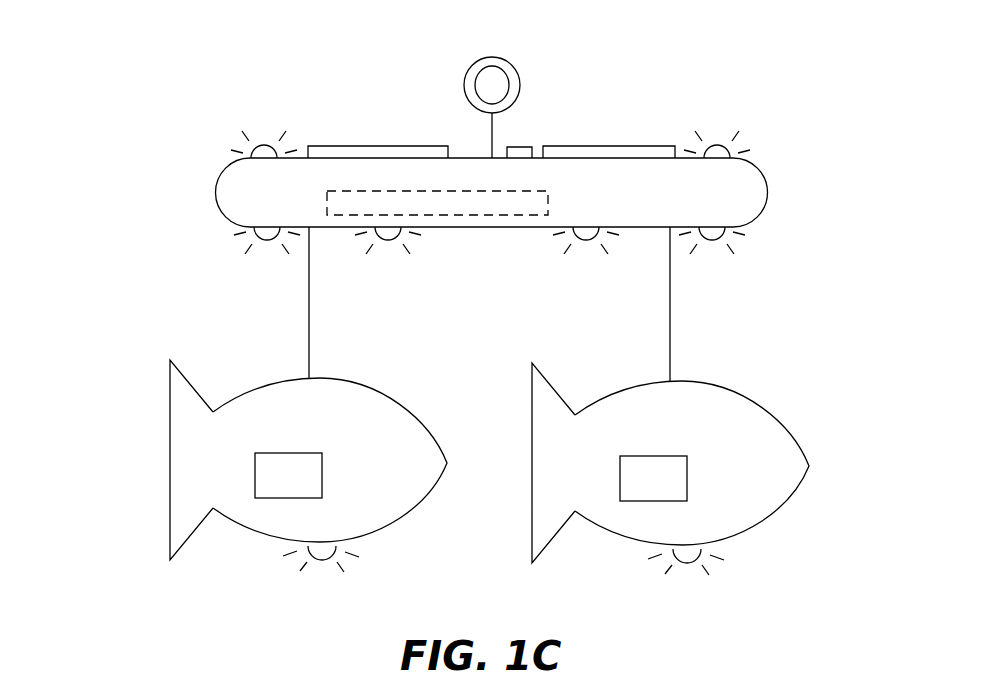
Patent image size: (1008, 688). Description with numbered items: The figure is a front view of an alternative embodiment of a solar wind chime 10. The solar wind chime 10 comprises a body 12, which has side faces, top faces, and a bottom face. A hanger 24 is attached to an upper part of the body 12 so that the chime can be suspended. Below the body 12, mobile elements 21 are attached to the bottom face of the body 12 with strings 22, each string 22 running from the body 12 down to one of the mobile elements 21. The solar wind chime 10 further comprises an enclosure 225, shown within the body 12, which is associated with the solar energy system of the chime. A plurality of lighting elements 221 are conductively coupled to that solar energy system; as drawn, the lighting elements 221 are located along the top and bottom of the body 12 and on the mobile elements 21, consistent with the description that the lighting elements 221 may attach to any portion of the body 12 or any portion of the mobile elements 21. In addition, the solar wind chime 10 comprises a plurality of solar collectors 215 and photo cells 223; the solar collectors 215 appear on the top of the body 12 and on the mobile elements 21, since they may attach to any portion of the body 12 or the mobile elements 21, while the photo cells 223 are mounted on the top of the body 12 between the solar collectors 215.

The solar wind chime 10 is at (130, 117).
The body 12 is at (769, 191).
The hanger 24 is at (517, 67).
The photo cells 223 is at (520, 147).
The solar collectors 215 is at (380, 146).
The enclosure 225 is at (548, 203).
The lighting elements 221 is at (265, 143).
The strings 22 is at (310, 327).
The mobile elements 21 is at (407, 403).